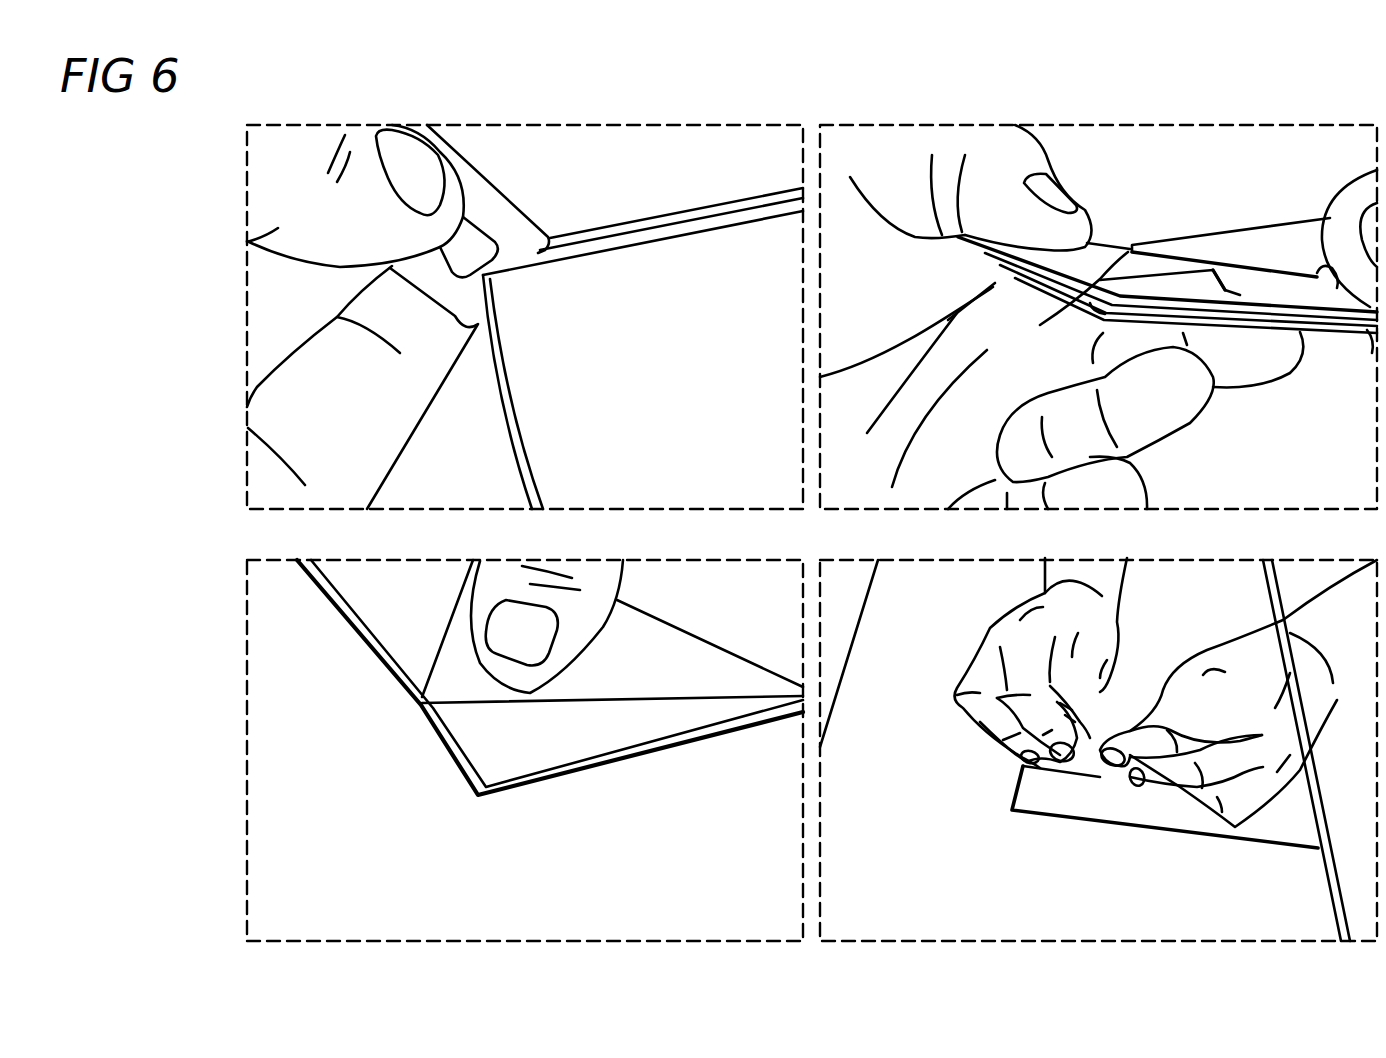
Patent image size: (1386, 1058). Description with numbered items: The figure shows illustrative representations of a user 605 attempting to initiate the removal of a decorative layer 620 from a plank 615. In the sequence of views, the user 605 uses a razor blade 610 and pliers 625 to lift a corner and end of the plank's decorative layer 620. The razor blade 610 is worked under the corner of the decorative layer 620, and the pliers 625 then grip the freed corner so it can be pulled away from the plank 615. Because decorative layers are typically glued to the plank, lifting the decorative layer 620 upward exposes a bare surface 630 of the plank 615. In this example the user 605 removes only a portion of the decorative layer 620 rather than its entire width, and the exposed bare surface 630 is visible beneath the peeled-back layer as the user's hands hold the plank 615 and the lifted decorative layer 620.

The user 605 is at (393, 467).
The razor blade 610 is at (505, 193).
The plank 615 is at (621, 223).
The decorative layer 620 is at (667, 356).
The pliers 625 is at (1237, 225).
The bare surface 630 is at (545, 745).